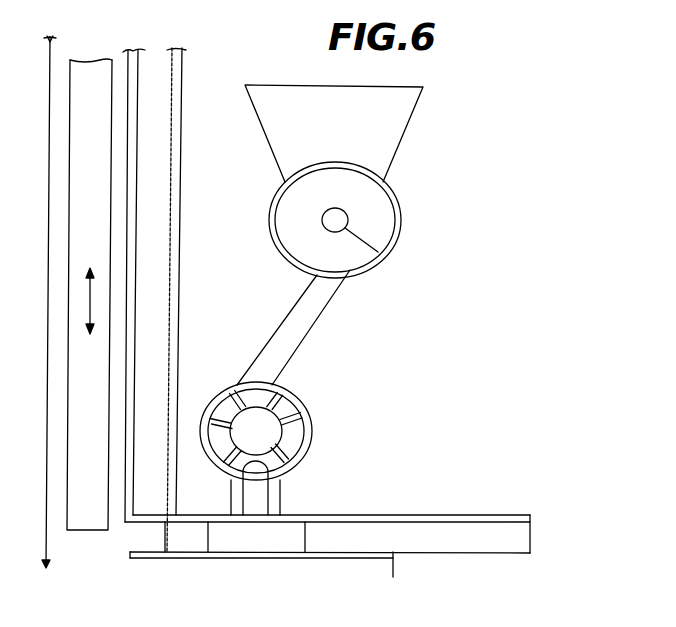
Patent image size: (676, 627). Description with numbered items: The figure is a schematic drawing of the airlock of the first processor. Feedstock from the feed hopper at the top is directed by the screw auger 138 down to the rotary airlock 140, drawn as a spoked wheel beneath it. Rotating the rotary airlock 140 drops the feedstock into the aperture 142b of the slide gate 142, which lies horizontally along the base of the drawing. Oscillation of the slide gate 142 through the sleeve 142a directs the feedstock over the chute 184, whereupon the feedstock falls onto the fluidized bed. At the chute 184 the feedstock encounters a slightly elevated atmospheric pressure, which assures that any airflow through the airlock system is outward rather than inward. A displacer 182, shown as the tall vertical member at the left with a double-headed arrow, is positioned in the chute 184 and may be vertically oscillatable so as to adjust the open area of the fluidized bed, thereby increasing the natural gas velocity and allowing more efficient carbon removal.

The screw auger 138 is at (387, 218).
The rotary airlock 140 is at (302, 393).
The slide gate 142 is at (494, 509).
The sleeve 142a is at (136, 551).
The aperture 142b is at (263, 542).
The displacer 182 is at (105, 397).
The chute 184 is at (122, 105).